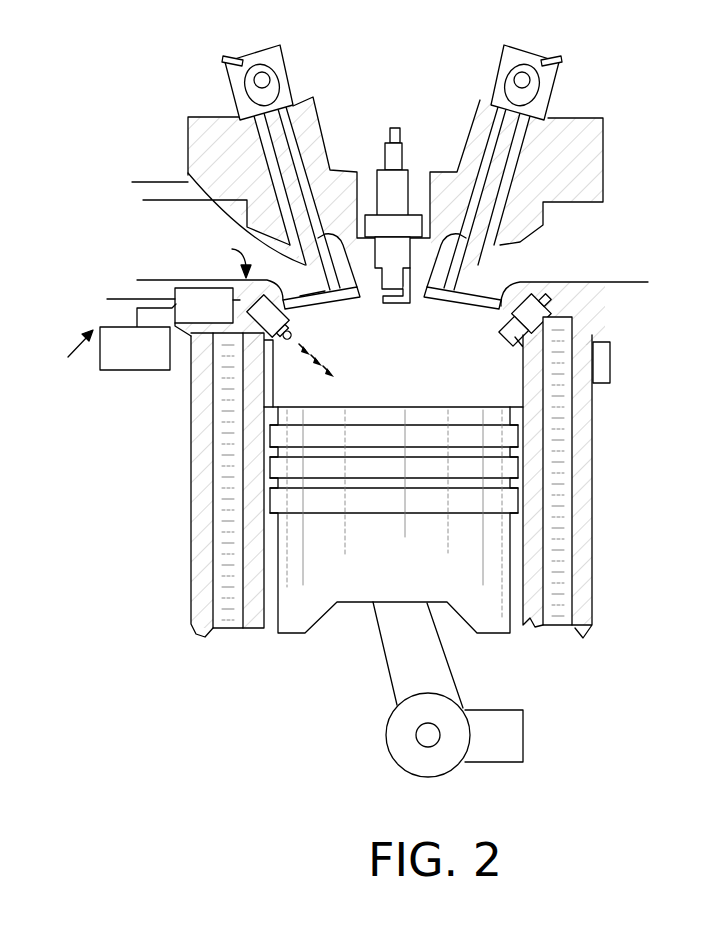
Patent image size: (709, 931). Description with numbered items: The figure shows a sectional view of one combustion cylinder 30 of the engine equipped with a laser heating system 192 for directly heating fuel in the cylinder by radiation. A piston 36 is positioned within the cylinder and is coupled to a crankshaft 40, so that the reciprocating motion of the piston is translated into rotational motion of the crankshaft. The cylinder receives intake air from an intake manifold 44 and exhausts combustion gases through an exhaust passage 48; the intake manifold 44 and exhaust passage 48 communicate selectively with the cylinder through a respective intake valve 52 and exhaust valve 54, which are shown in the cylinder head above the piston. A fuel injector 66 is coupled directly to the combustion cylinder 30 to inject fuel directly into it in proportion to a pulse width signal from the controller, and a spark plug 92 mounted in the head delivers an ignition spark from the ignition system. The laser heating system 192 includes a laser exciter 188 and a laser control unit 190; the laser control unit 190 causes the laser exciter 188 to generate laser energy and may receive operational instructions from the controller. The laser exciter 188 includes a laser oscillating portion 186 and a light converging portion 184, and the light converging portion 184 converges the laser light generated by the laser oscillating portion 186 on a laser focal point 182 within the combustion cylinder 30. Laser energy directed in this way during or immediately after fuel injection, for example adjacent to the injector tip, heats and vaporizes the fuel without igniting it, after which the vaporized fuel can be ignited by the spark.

The combustion cylinder 30 is at (377, 380).
The piston 36 is at (292, 590).
The crankshaft 40 is at (391, 746).
The intake manifold 44 is at (620, 244).
The exhaust passage 48 is at (152, 256).
The intake valve 52 is at (482, 273).
The exhaust valve 54 is at (188, 172).
The fuel injector 66 is at (606, 333).
The spark plug 92 is at (403, 157).
The laser focal point 182 is at (296, 333).
The light converging portion 184 is at (320, 292).
The laser oscillating portion 186 is at (223, 320).
The laser exciter 188 is at (220, 257).
The laser control unit 190 is at (155, 363).
The laser heating system 192 is at (60, 362).